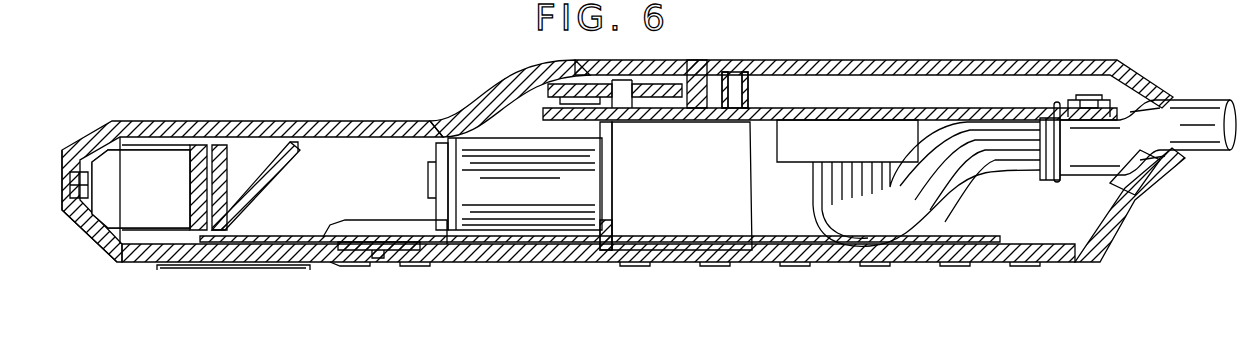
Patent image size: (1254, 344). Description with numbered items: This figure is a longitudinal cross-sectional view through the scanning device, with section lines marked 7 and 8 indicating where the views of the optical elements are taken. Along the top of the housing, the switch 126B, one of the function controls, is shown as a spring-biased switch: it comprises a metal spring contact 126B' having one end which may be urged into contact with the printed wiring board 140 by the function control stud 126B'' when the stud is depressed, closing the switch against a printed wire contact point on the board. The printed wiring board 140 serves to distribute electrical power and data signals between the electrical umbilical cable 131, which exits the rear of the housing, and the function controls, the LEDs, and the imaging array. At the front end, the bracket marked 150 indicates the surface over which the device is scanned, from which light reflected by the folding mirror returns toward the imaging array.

The switch 126B is at (623, 153).
The metal spring contact 126B' is at (632, 123).
The function control stud 126B'' is at (671, 68).
The printed wiring board 140 is at (657, 115).
The electrical umbilical cable 131 is at (1192, 142).
The surface 150 is at (178, 265).
The section line 7- 7 is at (280, 313).
The section line 8- 8 is at (645, 190).